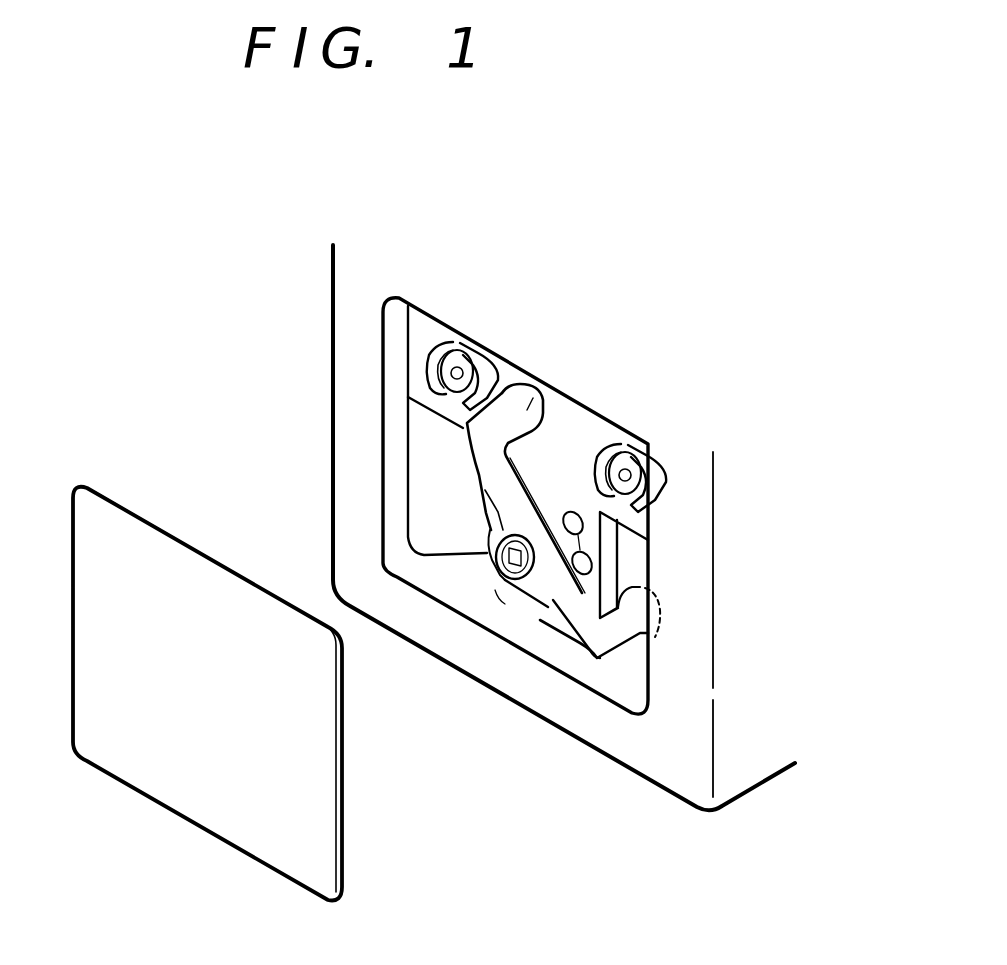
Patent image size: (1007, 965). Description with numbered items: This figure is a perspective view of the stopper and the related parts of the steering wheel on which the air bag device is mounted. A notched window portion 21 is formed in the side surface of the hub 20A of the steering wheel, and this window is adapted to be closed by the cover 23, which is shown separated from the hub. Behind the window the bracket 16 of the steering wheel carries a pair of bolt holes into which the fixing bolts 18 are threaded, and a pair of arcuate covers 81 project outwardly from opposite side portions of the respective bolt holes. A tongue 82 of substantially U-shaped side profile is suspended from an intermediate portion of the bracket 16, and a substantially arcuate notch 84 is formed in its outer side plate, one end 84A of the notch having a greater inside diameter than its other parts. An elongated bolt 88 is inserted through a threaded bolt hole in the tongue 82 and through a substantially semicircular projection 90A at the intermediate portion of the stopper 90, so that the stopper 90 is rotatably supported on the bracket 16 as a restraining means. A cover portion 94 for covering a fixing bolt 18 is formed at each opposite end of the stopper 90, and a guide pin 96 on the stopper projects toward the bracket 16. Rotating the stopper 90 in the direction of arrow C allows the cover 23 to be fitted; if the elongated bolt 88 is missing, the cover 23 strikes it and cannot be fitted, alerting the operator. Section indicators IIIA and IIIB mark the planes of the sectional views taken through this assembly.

The bracket 16 is at (564, 416).
The fixing bolt 18 is at (462, 340).
The hub 20A is at (763, 774).
The notched window portion 21 is at (463, 603).
The cover 23 is at (344, 790).
The arcuate cover 81 is at (444, 345).
The tongue 82 is at (493, 540).
The notch 84 is at (592, 558).
The one end of the notch 84A is at (562, 522).
The elongated bolt 88 is at (540, 586).
The stopper 90 is at (470, 468).
The projection 90A is at (488, 552).
The cover portion 94 is at (530, 408).
The guide pin 96 is at (568, 645).
The direction of arrow C is at (630, 560).
The section line IIIA is at (363, 758).
The section line IIIB is at (562, 292).